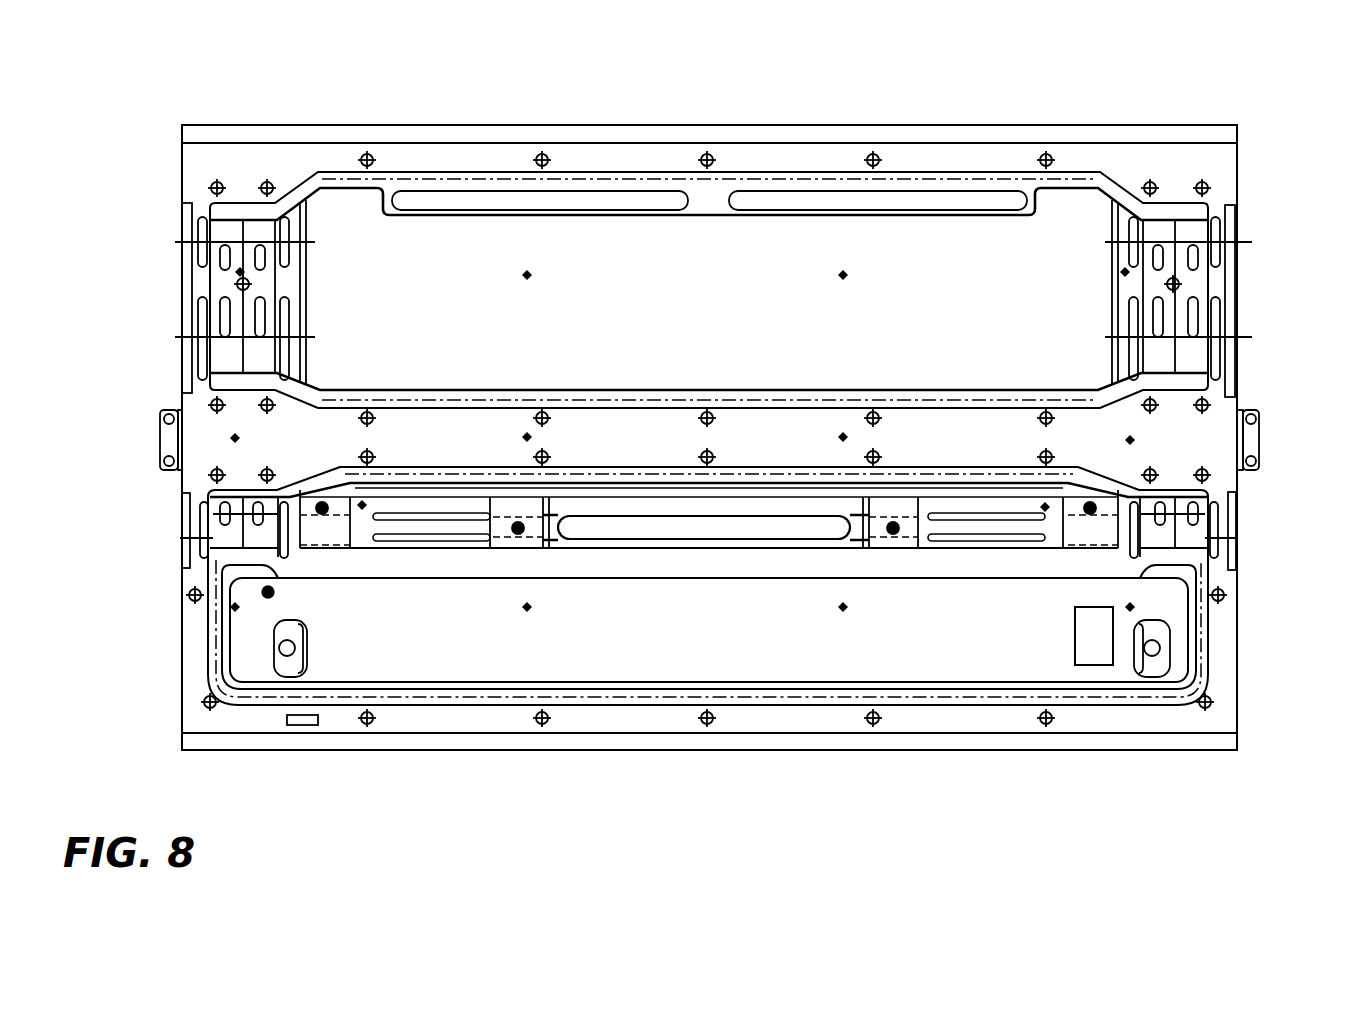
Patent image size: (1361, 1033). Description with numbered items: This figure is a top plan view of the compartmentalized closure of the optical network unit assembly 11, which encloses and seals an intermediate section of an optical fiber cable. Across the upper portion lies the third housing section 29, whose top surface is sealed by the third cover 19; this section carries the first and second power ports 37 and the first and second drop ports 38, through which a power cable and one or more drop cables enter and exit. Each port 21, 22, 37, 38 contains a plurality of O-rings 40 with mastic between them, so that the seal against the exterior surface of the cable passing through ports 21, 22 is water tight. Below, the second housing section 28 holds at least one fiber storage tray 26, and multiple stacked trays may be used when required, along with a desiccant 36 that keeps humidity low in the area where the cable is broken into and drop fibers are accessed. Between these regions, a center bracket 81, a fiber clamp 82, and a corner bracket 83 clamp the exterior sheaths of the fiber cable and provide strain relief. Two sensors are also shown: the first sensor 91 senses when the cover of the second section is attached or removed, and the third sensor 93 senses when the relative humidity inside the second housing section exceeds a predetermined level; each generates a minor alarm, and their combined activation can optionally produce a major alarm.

The optical network unit assembly 11 is at (483, 48).
The O-rings 40 is at (311, 172).
The third cover 19 is at (455, 228).
The third housing section 29 is at (905, 232).
The drop ports 38 is at (205, 241).
The power ports 37 is at (210, 337).
The port 22 is at (197, 548).
The port 21 is at (1228, 548).
The corner bracket 83 is at (380, 492).
The fiber clamp 82 is at (590, 505).
The center bracket 81 is at (897, 500).
The third sensor 93 is at (266, 594).
The first sensor 91 is at (300, 727).
The fiber storage tray 26 is at (481, 665).
The second housing section 28 is at (648, 668).
The desiccant 36 is at (1100, 668).